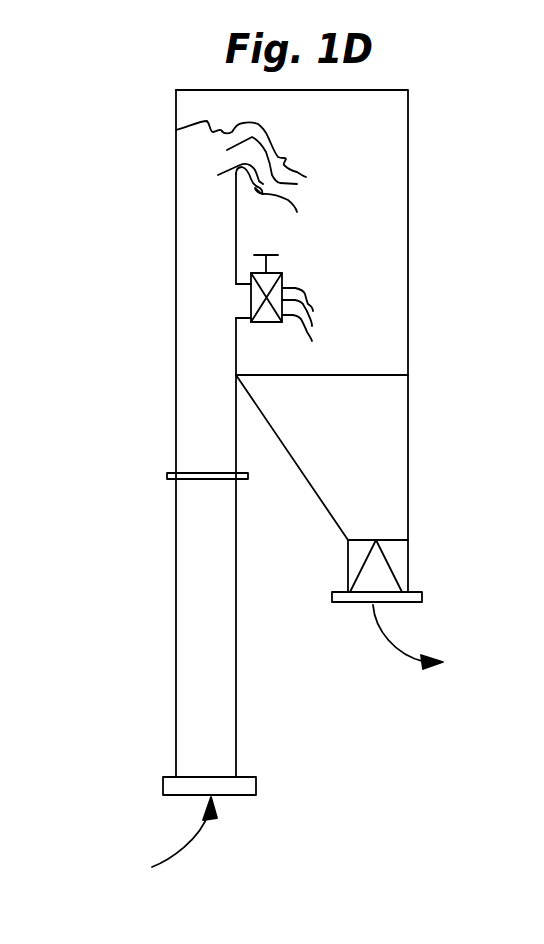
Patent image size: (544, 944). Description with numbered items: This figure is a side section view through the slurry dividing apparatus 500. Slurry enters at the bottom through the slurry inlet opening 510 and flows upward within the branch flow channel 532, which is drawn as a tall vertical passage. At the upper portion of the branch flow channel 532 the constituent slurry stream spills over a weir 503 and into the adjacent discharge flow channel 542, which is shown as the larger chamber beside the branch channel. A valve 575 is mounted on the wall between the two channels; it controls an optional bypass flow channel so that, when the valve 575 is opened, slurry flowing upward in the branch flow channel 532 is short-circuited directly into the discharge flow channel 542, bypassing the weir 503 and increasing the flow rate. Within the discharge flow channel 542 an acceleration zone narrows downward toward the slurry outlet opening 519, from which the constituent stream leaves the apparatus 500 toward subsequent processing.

The slurry dividing apparatus 500 is at (435, 708).
The weir 503 is at (232, 185).
The slurry inlet opening 510 is at (180, 795).
The slurry outlet opening 519 is at (398, 603).
The branch flow channel 532 is at (188, 382).
The discharge flow channel 542 is at (384, 257).
The valve 575 is at (270, 322).